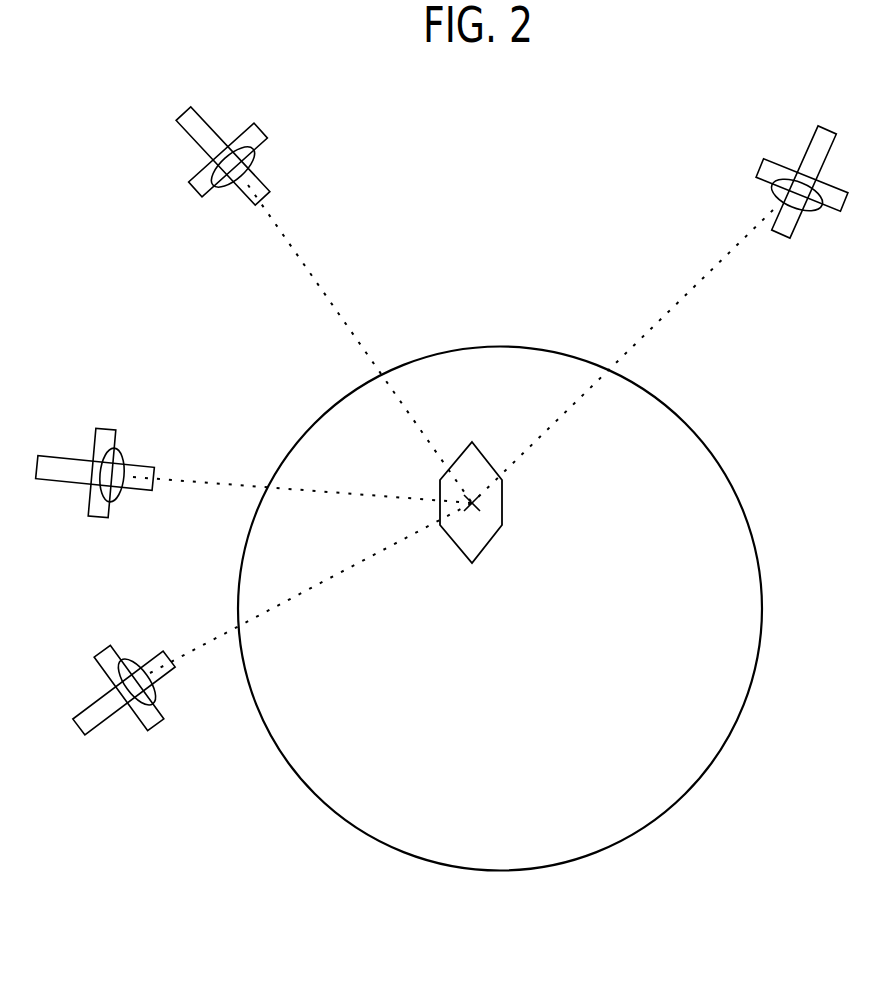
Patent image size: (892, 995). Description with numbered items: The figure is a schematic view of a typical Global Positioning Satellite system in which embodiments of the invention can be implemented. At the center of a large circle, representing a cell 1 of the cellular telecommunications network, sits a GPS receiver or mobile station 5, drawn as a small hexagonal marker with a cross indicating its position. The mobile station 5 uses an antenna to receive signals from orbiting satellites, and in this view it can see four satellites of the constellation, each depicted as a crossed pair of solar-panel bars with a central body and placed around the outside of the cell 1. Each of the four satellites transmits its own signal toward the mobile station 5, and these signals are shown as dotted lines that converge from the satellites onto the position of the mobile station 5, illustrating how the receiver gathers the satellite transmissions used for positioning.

The cell 1 is at (470, 543).
The mobile station 5 is at (480, 502).